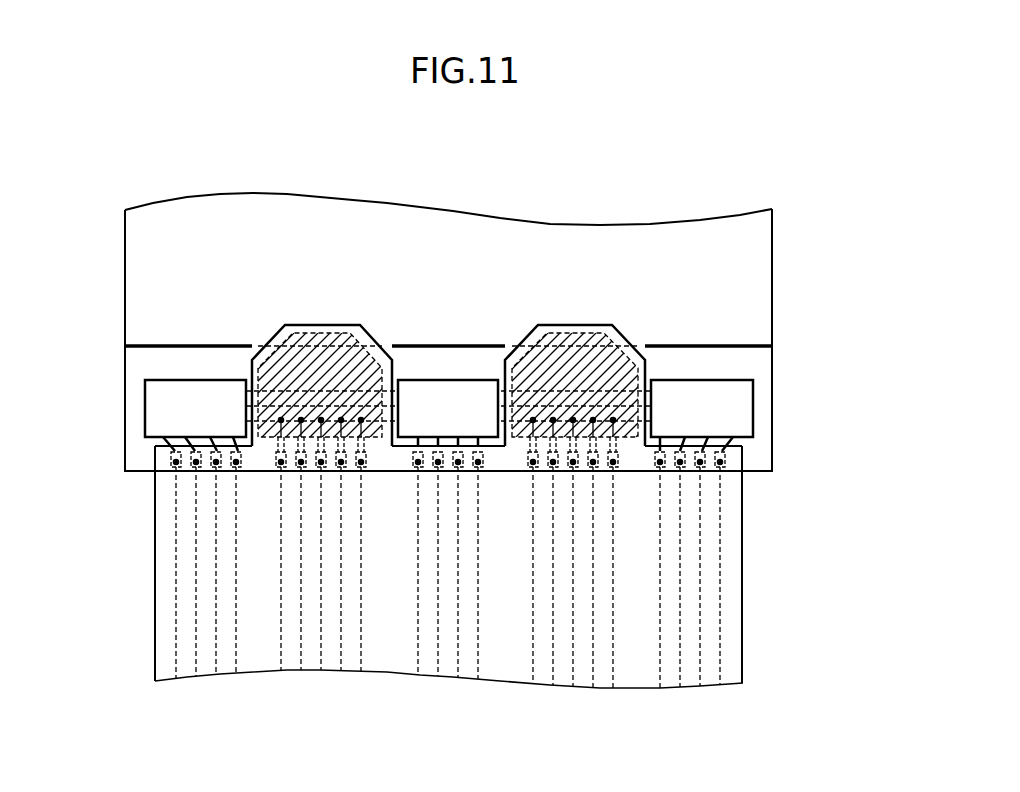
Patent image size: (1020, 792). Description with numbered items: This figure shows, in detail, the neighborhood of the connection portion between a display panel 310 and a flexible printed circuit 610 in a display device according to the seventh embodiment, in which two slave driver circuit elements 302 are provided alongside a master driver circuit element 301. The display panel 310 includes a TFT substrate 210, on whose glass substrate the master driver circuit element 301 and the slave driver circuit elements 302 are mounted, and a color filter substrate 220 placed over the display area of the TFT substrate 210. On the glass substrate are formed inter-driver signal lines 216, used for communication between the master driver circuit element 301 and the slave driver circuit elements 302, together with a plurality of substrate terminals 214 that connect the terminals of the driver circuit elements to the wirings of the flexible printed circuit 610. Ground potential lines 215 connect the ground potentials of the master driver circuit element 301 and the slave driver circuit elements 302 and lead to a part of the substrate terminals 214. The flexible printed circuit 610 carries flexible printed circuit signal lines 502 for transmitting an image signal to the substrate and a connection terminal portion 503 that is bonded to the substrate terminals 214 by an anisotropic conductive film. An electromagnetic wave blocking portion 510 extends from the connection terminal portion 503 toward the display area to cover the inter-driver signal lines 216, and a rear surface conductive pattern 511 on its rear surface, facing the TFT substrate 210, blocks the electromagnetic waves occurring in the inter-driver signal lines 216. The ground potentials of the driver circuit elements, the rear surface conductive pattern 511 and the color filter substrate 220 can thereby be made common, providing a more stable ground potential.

The display panel 310 is at (501, 290).
The color filter substrate 220 is at (762, 288).
The TFT substrate 210 is at (760, 362).
The substrate terminals 214 is at (732, 453).
The ground potential lines 215 is at (282, 445).
The inter-driver signal lines 216 is at (575, 377).
The master driver circuit element 301 is at (152, 406).
The slave driver circuit element 302 is at (448, 393).
The flexible printed circuit signal lines 502 is at (722, 567).
The connection terminal portion 503 is at (628, 464).
The electromagnetic wave blocking portion 510 is at (283, 331).
The rear surface conductive pattern 511 is at (615, 332).
The flexible printed circuit 610 is at (732, 650).